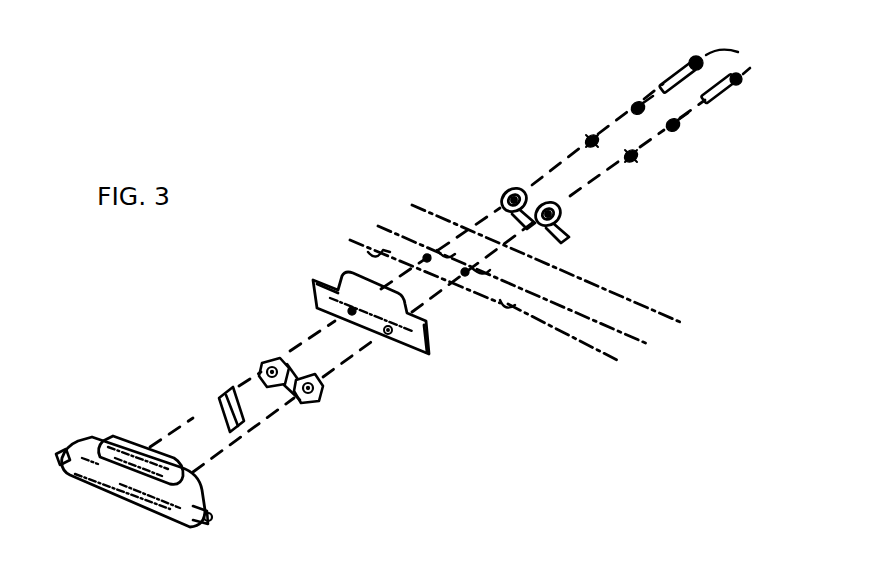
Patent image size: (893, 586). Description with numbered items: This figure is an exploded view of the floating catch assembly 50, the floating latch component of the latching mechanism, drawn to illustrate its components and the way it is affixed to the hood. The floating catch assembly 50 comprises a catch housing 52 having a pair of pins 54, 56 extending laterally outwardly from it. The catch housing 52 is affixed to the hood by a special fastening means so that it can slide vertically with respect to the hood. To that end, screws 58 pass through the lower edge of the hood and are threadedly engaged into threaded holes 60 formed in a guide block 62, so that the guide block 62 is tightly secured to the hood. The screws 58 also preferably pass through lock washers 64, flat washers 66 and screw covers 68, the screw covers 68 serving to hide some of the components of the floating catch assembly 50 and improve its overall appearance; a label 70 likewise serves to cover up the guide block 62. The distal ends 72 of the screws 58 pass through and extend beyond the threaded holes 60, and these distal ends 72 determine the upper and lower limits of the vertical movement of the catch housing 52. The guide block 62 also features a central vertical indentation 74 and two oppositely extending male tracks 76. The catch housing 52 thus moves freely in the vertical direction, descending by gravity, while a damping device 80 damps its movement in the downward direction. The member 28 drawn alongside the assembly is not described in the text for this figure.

The structural member 28 is at (569, 295).
The mounting assembly 50 is at (366, 178).
The housing 52 is at (117, 485).
The end fitting 54 is at (202, 520).
The end fitting 56 is at (57, 452).
The bolt head 58 is at (691, 58).
The spacer assembly 60 is at (312, 402).
The spacer opening 62 is at (277, 358).
The washer 64 is at (634, 106).
The nut 66 is at (591, 139).
The grommet 68 is at (514, 180).
The mounting plate 70 is at (344, 279).
The bolt 72 is at (666, 88).
The spacer opening 74 is at (288, 398).
The spacer block 76 is at (264, 364).
The clip 80 is at (213, 393).